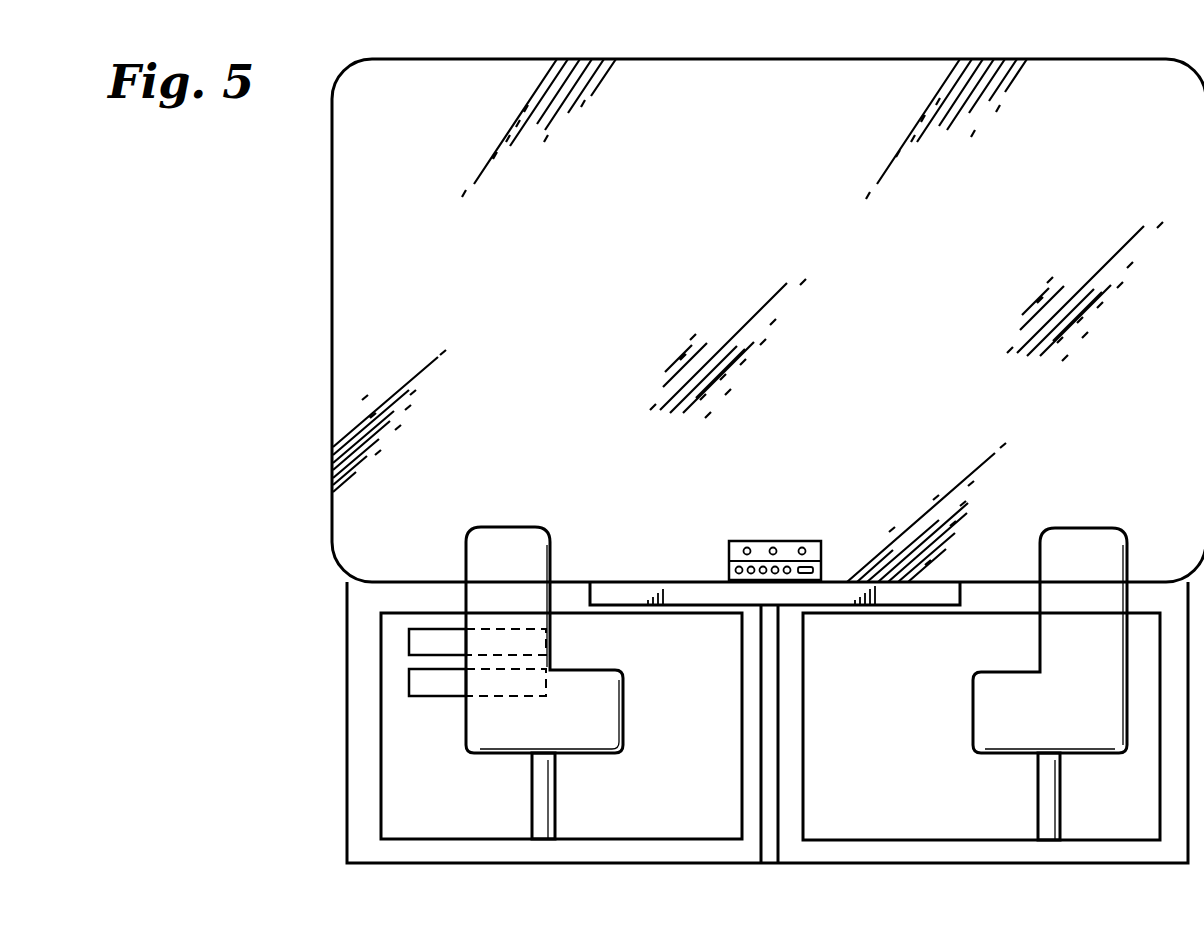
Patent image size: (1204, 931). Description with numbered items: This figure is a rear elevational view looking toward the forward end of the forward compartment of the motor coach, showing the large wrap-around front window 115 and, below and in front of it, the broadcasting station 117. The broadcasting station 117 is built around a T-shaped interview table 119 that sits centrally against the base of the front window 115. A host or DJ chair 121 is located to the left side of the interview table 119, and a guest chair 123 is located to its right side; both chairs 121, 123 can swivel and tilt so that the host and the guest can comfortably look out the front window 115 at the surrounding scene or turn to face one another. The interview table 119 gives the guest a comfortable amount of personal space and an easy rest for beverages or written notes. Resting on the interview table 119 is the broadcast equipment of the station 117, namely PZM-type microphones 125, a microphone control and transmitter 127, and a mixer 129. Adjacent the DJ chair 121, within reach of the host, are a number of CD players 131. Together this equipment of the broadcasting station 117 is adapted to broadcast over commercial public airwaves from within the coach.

The wrap-around front window 115 is at (362, 201).
The broadcasting station 117 is at (290, 589).
The T-shaped interview table 119 is at (895, 591).
The host or DJ chair 121 is at (470, 528).
The guest chair 123 is at (1085, 528).
The PZM-type microphones 125 is at (745, 529).
The microphone control and transmitter 127 is at (812, 541).
The mixer 129 is at (742, 541).
The CD players 131 is at (409, 682).